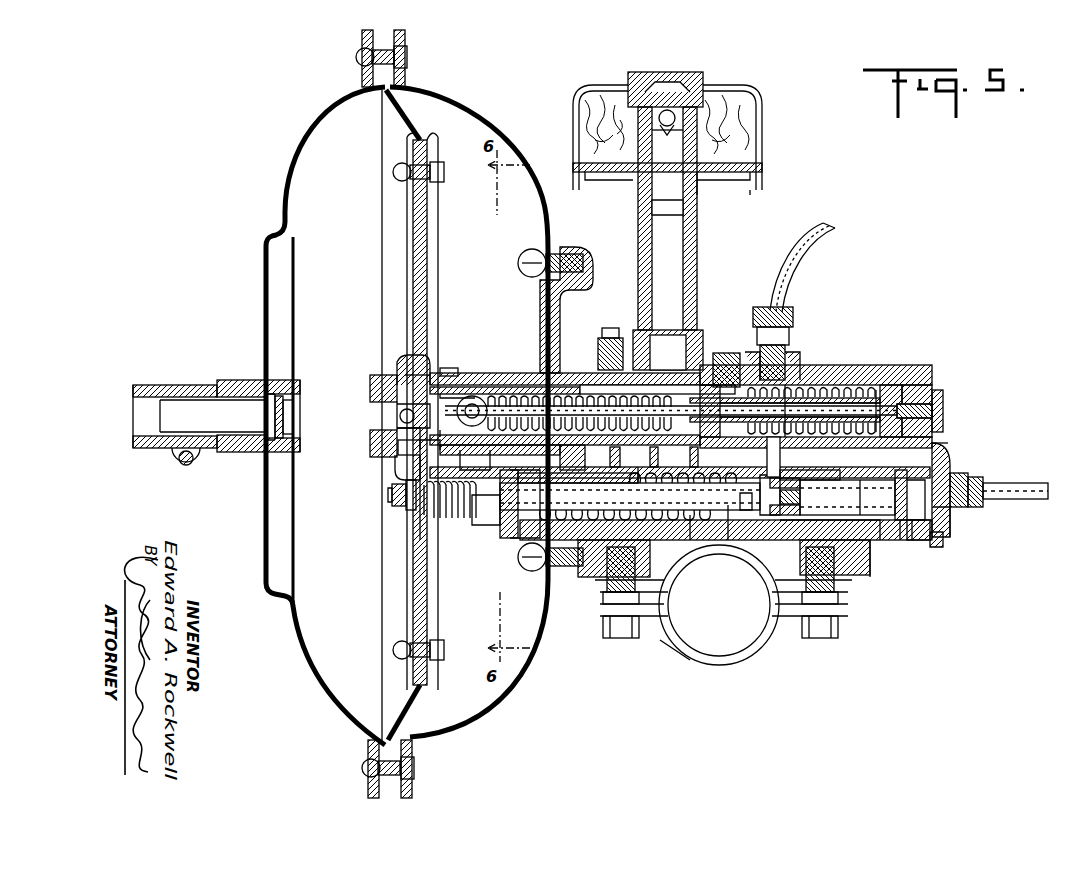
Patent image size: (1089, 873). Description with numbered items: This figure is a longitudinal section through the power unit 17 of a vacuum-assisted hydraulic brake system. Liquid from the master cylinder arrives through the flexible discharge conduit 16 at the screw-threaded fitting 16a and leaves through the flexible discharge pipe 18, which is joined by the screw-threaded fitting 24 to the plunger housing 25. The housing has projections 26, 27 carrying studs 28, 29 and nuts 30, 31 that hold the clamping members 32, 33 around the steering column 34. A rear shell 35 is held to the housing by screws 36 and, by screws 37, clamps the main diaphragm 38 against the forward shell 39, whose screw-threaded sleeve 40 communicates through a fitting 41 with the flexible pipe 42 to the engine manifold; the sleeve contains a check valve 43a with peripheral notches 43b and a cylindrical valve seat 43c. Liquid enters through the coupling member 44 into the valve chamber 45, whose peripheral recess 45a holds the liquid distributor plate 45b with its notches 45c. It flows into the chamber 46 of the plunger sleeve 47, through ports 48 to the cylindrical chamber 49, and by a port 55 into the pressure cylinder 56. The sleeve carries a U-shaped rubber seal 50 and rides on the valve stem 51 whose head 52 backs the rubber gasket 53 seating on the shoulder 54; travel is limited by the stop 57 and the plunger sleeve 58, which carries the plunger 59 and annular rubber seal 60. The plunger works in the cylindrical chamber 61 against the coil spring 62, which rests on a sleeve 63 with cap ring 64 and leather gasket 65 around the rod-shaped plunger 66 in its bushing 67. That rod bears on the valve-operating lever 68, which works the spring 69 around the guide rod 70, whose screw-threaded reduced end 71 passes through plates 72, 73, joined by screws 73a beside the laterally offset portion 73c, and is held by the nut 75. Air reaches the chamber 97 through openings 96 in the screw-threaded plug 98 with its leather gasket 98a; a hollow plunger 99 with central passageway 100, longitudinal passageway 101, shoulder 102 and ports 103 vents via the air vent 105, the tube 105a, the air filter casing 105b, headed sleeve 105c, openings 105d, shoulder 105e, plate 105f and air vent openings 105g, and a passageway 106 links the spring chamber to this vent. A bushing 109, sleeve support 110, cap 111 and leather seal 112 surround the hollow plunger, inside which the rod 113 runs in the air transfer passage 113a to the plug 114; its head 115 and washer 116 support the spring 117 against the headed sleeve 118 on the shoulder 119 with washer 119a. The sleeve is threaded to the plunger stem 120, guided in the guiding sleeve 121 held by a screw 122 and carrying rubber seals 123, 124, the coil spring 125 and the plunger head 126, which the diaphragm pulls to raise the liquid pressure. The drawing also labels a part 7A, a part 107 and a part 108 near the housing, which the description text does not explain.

The flexible discharge conduit 16 is at (1020, 498).
The screw-threaded fitting 16a is at (978, 478).
The power unit 17 is at (238, 192).
The flexible discharge pipe 18 is at (838, 216).
The screw-threaded fitting 24 is at (790, 320).
The plunger housing 25 is at (882, 365).
The projection 26 is at (600, 580).
The projection 27 is at (850, 580).
The stud 28 is at (603, 606).
The stud 29 is at (840, 606).
The nut 30 is at (605, 636).
The nut 31 is at (838, 634).
The clamping member 32 is at (775, 582).
The clamping member 33 is at (776, 624).
The steering column 34 is at (668, 640).
The rear shell 35 is at (498, 705).
The screw 36 is at (525, 252).
The screw 37 is at (362, 50).
The main diaphragm 38 is at (402, 122).
The forward shell 39 is at (318, 680).
The screw-threaded sleeve 40 is at (256, 452).
The fitting 41 is at (213, 452).
The flexible pipe 42 is at (145, 385).
The check valve 43a is at (266, 414).
The peripheral notches 43b is at (268, 385).
The cylindrical valve seat 43c is at (293, 416).
The coupling member 44 is at (943, 540).
The valve chamber 45 is at (948, 468).
The peripheral recess 45a is at (938, 448).
The liquid distributor plate 45b is at (950, 513).
The notches 45c is at (925, 540).
The chamber 46 is at (800, 497).
The plunger sleeve 47 is at (847, 482).
The ports 48 is at (835, 557).
The cylindrical chamber 49 is at (808, 522).
The U-shaped rubber seal 50 is at (858, 482).
The valve stem 51 is at (784, 512).
The head 52 is at (912, 540).
The rubber gasket 53 is at (912, 520).
The shoulder 54 is at (898, 540).
The port 55 is at (810, 465).
The pressure cylinder 56 is at (832, 392).
The stop 57 is at (892, 485).
The plunger sleeve 58 is at (785, 477).
The plunger 59 is at (728, 540).
The annular rubber seal 60 is at (748, 515).
The cylindrical chamber 61 is at (692, 540).
The coil spring 62 is at (678, 512).
The sleeve 63 is at (540, 530).
The cap ring 64 is at (510, 540).
The leather gasket 65 is at (518, 480).
The rod-shaped plunger 66 is at (678, 520).
The bushing 67 is at (725, 530).
The valve-operating lever 68 is at (490, 528).
The spring 69 is at (450, 522).
The guide rod 70 is at (418, 522).
The screw-threaded reduced end 71 is at (390, 494).
The plate 72 is at (413, 256).
The plate 73 is at (430, 258).
The screws 73a is at (395, 175).
The laterally offset portion 73c is at (410, 372).
The nut 75 is at (406, 505).
The retainer 7A is at (396, 466).
The openings 96 is at (397, 420).
The chamber 97 is at (398, 380).
The screw-threaded plug 98 is at (370, 388).
The leather gasket 98a is at (372, 443).
The hollow plunger 99 is at (478, 450).
The central passageway 100 is at (681, 457).
The longitudinal passageway 101 is at (440, 448).
The shoulder 102 is at (412, 447).
The ports 103 is at (628, 458).
The air vent 105 is at (652, 372).
The tube 105a is at (697, 255).
The air filter casing 105b is at (760, 97).
The headed sleeve 105c is at (642, 72).
The openings 105d is at (671, 134).
The shoulder 105e is at (690, 165).
The plate 105f is at (705, 185).
The air vent openings 105g is at (605, 180).
The passageway 106 is at (630, 496).
The screw 107 is at (610, 328).
The bracket 108 is at (590, 300).
The bushing 109 is at (505, 373).
The sleeve support 110 is at (478, 373).
The cap 111 is at (455, 394).
The leather seal 112 is at (446, 368).
The rod 113 is at (806, 392).
The air transfer passage 113a is at (920, 395).
The plug 114 is at (943, 401).
The head 115 is at (458, 409).
The washer 116 is at (490, 395).
The spring 117 is at (520, 395).
The headed sleeve 118 is at (668, 458).
The shoulder 119 is at (708, 458).
The washer 119a is at (657, 387).
The plunger stem 120 is at (880, 392).
The guiding sleeve 121 is at (754, 457).
The screw 122 is at (722, 353).
The rubber seal 123 is at (758, 362).
The rubber seal 124 is at (875, 392).
The coil spring 125 is at (800, 365).
The plunger head 126 is at (905, 385).